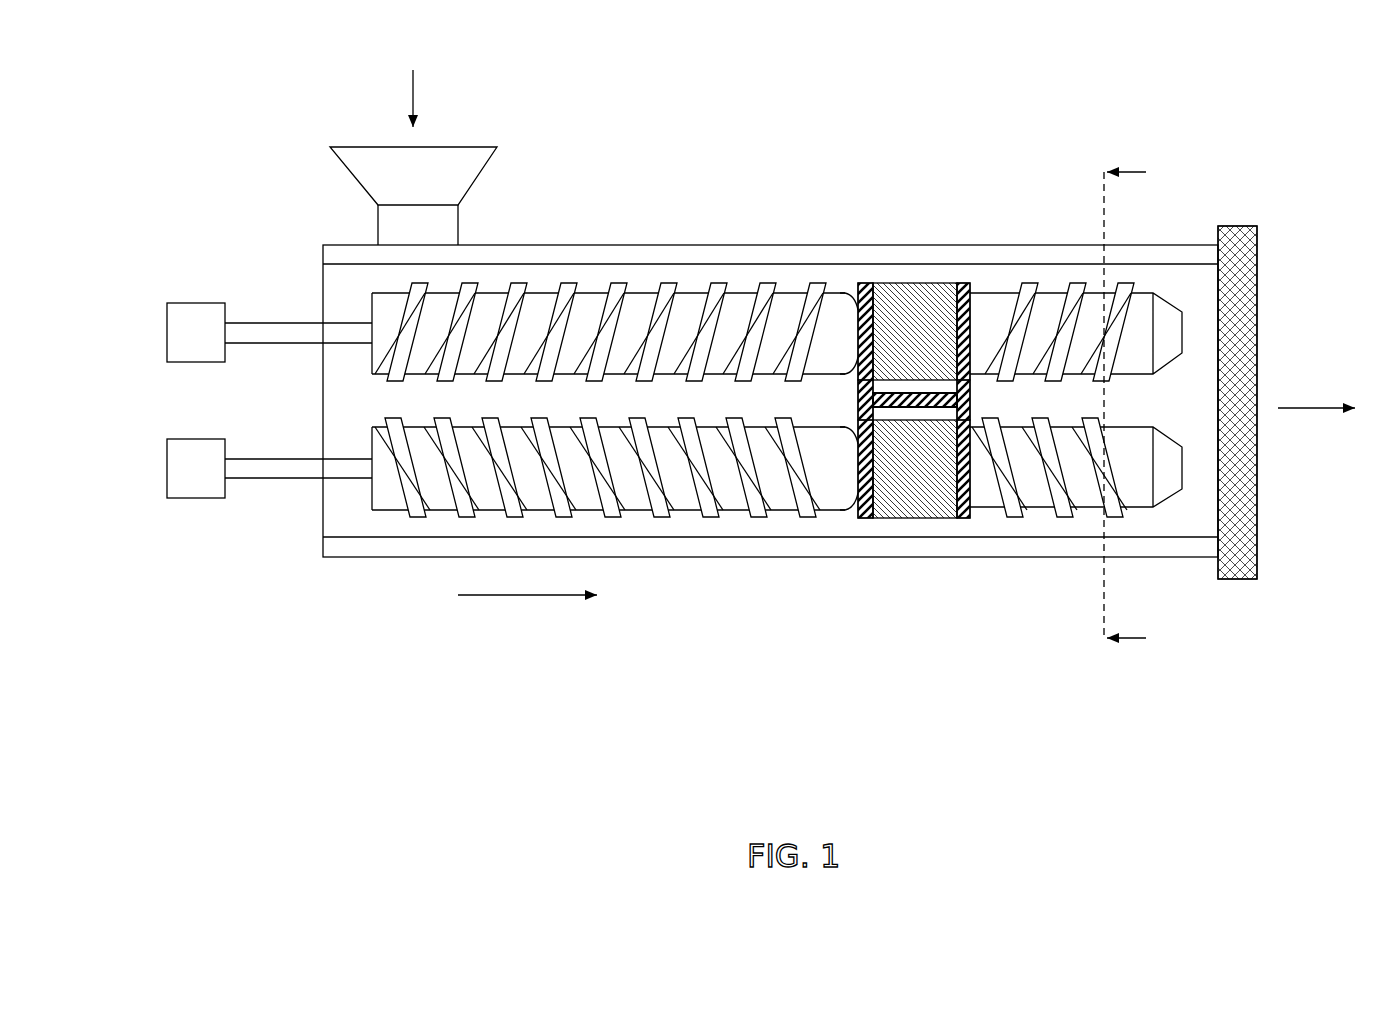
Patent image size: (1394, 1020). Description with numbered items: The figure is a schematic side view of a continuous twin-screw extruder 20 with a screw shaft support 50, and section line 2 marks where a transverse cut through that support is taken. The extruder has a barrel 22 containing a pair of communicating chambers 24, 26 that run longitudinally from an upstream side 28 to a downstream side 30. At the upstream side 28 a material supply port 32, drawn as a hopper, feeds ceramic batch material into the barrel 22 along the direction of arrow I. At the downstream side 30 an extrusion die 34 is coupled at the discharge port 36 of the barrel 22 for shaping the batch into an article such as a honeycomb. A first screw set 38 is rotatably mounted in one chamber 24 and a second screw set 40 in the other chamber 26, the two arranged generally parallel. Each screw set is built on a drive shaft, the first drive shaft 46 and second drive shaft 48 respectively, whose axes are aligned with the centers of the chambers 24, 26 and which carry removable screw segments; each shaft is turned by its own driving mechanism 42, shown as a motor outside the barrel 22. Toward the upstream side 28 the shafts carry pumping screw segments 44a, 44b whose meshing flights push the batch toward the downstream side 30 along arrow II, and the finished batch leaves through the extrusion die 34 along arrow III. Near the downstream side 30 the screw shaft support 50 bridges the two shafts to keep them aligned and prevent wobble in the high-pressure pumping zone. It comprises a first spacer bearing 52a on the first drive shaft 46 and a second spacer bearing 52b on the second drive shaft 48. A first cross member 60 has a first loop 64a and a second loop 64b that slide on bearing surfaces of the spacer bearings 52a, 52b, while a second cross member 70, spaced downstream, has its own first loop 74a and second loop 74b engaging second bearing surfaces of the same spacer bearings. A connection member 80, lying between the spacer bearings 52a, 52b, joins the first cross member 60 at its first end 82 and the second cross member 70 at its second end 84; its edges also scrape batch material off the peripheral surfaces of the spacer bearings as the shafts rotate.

The twin-screw extruder 20 is at (787, 107).
The barrel 22 is at (498, 240).
The chamber 24 is at (597, 277).
The chamber 26 is at (466, 528).
The upstream side 28 is at (323, 145).
The downstream side 30 is at (1316, 204).
The material supply port 32 is at (373, 167).
The extrusion die 34 is at (1239, 301).
The discharge port 36 is at (1178, 283).
The first screw set 38 is at (708, 287).
The second screw set 40 is at (670, 500).
The driving mechanism 42 is at (185, 439).
The pumping screw segment 44a is at (797, 290).
The pumping screw segment 44b is at (797, 495).
The first drive shaft 46 is at (282, 320).
The second drive shaft 48 is at (283, 480).
The screw shaft support 50 is at (916, 349).
The first spacer bearing 52a is at (922, 302).
The second spacer bearing 52b is at (898, 500).
The first cross member 60 is at (865, 288).
The first loop 64a is at (860, 298).
The second loop 64b is at (858, 478).
The second cross member 70 is at (965, 290).
The first loop 74a is at (965, 325).
The second loop 74b is at (968, 485).
The connection member 80 is at (912, 398).
The first end 82 is at (858, 390).
The second end 84 is at (970, 403).
The section line 2- 2 is at (1132, 408).
The arrow I is at (415, 85).
The arrow II is at (538, 598).
The arrow III is at (1312, 413).